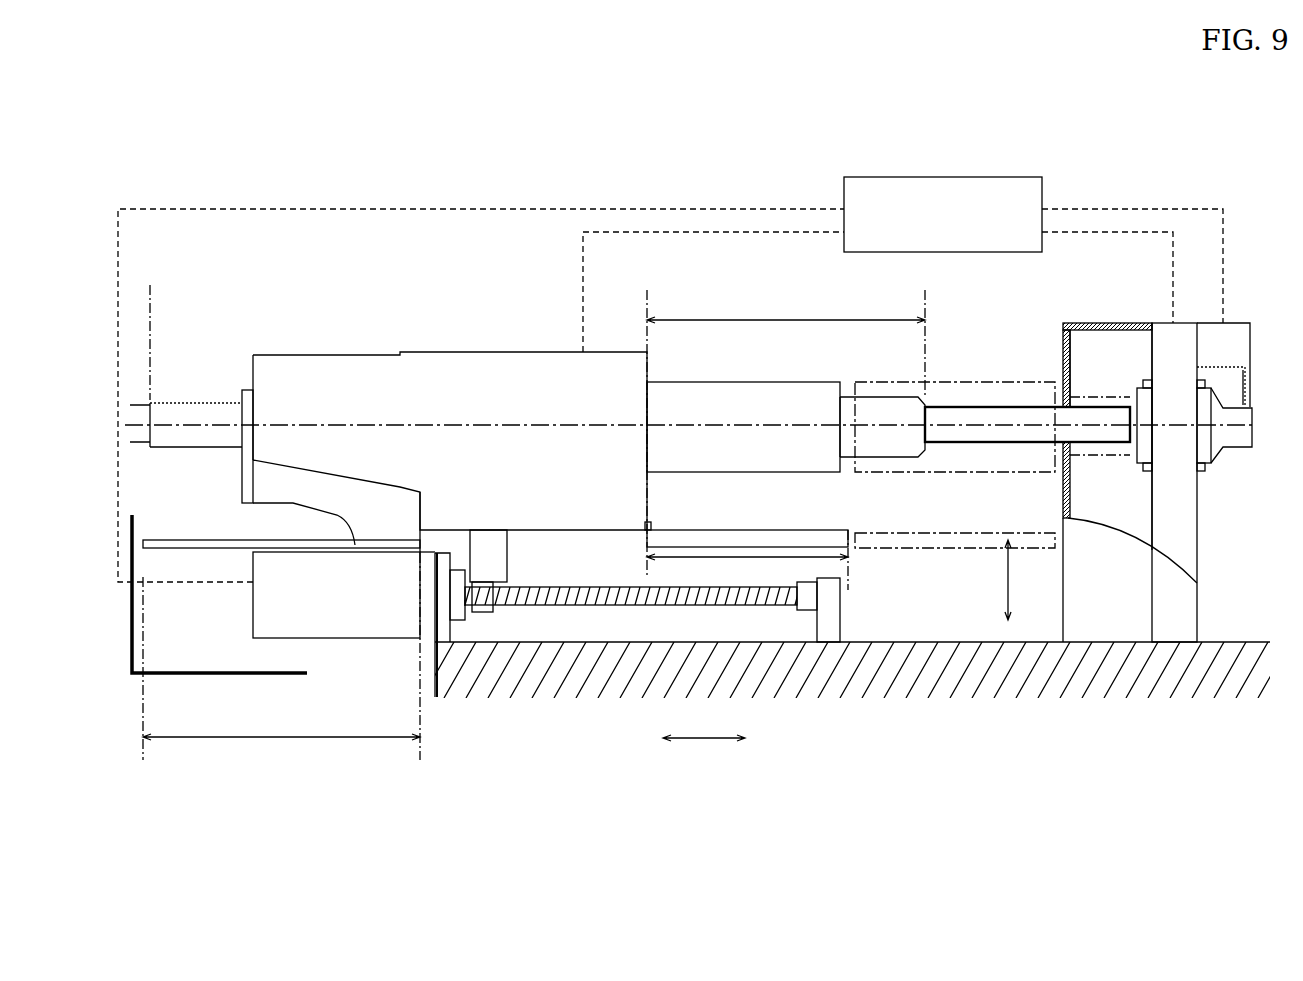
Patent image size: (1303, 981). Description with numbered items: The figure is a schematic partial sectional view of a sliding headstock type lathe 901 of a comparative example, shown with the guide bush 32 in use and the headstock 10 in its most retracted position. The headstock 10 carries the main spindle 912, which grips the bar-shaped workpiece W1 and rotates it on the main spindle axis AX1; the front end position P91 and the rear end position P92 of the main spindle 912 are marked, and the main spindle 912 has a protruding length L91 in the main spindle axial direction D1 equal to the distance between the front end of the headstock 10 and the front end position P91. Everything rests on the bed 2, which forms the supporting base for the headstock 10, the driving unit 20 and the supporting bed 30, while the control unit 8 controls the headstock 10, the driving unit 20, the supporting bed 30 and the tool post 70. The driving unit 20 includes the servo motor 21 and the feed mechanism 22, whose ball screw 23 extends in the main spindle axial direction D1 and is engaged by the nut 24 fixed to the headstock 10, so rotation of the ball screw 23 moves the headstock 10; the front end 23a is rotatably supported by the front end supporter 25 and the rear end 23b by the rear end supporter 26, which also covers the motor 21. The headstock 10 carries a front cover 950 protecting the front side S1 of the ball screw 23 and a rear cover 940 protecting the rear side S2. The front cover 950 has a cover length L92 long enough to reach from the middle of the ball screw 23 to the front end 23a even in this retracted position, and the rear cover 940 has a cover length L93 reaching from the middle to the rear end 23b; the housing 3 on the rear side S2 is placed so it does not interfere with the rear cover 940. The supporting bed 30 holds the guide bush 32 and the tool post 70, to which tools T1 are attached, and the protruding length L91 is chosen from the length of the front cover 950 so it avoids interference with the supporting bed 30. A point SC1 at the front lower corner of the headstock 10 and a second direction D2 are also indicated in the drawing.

The sliding headstock type lathe 901 is at (195, 178).
The control unit 8 is at (943, 214).
The headstock 10 is at (477, 390).
The main spindle 912 is at (895, 458).
The rear cover 940 is at (252, 540).
The front cover 950 is at (768, 530).
The sensor SC1 is at (652, 527).
The servo motor 21 is at (318, 596).
The driving unit 20 is at (350, 625).
The housing 3 is at (132, 647).
The rear end supporter 26 is at (440, 625).
The ball screw 23 is at (572, 586).
The front end 23a is at (797, 608).
The rear end 23b is at (466, 600).
The nut 24 is at (482, 612).
The front end supporter 25 is at (840, 592).
The feed mechanism 22 is at (558, 633).
The bed 2 is at (928, 642).
The guide bush 32 is at (1137, 388).
The supporting bed 30 is at (1197, 548).
The tool post 70 is at (1247, 323).
The tool T1 is at (1247, 402).
The workpiece W1 is at (1081, 407).
The main spindle axis AX1 is at (540, 425).
The front end position P91 is at (929, 332).
The rear end position P92 is at (151, 330).
The protruding length L91 is at (786, 432).
The cover length L92 is at (747, 560).
The cover length L93 is at (281, 664).
The main spindle axial direction D1 is at (704, 755).
The direction D2 is at (1024, 580).
The front side S1 is at (767, 741).
The rear side S2 is at (641, 741).